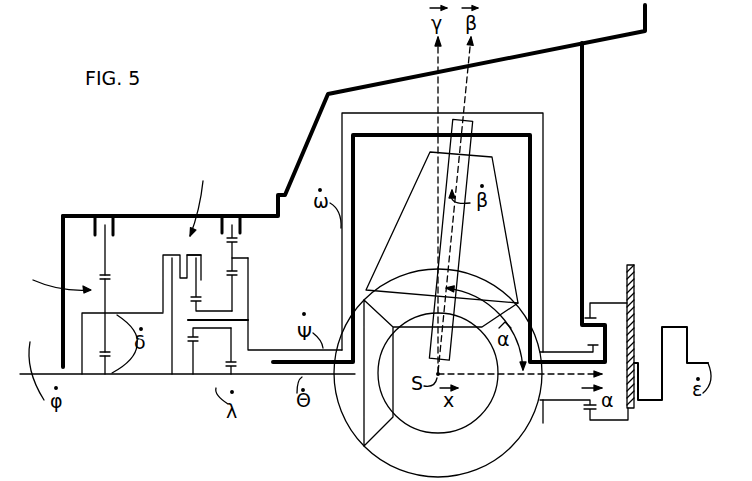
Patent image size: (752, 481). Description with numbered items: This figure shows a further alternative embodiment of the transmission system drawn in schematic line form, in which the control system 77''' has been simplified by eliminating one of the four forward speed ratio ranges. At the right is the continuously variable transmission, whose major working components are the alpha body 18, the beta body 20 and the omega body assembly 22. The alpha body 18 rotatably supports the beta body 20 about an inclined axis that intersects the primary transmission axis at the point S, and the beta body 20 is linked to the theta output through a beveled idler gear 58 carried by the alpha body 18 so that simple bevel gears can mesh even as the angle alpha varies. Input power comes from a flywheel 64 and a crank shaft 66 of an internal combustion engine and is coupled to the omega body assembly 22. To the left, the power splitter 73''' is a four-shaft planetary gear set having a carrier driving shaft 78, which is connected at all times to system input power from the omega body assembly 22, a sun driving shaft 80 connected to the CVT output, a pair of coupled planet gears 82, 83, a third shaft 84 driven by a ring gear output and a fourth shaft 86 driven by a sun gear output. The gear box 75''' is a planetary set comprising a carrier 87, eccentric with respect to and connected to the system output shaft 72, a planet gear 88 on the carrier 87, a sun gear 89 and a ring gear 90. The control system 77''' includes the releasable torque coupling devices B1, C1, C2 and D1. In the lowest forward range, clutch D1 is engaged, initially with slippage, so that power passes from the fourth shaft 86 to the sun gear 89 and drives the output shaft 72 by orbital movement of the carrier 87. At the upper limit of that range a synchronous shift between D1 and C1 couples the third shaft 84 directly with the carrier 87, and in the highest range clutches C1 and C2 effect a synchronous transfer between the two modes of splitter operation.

The alpha body 18 is at (531, 212).
The beta body 20 is at (500, 250).
The omega body assembly 22 is at (518, 113).
The beveled idler gear 58 is at (492, 459).
The flywheel 64 is at (631, 265).
The crank shaft 66 is at (662, 328).
The system output shaft 72 is at (48, 291).
The power splitter 73''' is at (250, 304).
The gear box 75''' is at (55, 275).
The control system 77''' is at (208, 198).
The carrier driving shaft 78 is at (254, 348).
The sun driving shaft 80 is at (230, 376).
The planet gear 82 is at (237, 276).
The planet gear 83 is at (193, 345).
The ring gear output third shaft 84 is at (199, 289).
The sun gear output fourth shaft 86 is at (170, 332).
The carrier 87 is at (82, 312).
The planet gear 88 is at (107, 299).
The sun gear 89 is at (102, 362).
The ring gear 90 is at (104, 261).
The clutch B1 is at (222, 214).
The clutch C1 is at (200, 256).
The clutch C2 is at (175, 256).
The clutch D1 is at (112, 213).